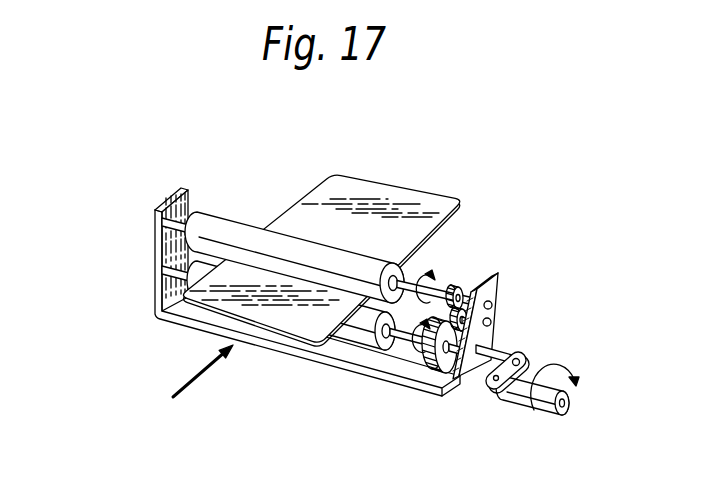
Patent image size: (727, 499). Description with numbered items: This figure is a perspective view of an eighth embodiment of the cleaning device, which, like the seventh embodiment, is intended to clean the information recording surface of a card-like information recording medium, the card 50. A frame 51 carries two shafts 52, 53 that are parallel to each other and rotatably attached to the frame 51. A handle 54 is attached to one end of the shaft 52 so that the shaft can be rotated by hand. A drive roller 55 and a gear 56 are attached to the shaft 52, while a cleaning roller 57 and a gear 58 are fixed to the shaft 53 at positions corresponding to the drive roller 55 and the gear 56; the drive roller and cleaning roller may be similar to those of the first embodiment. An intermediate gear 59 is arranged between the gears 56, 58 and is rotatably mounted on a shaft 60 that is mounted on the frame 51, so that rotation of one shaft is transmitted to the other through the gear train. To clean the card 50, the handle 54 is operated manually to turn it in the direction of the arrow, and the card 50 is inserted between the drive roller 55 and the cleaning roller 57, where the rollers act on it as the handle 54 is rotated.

The card 50 is at (398, 193).
The frame 51 is at (158, 242).
The shaft 52 is at (487, 360).
The shaft 53 is at (426, 290).
The handle 54 is at (518, 399).
The drive roller 55 is at (358, 336).
The gear 56 is at (433, 362).
The cleaning roller 57 is at (232, 232).
The gear 58 is at (468, 282).
The intermediate gear 59 is at (481, 334).
The shaft 60 is at (491, 320).